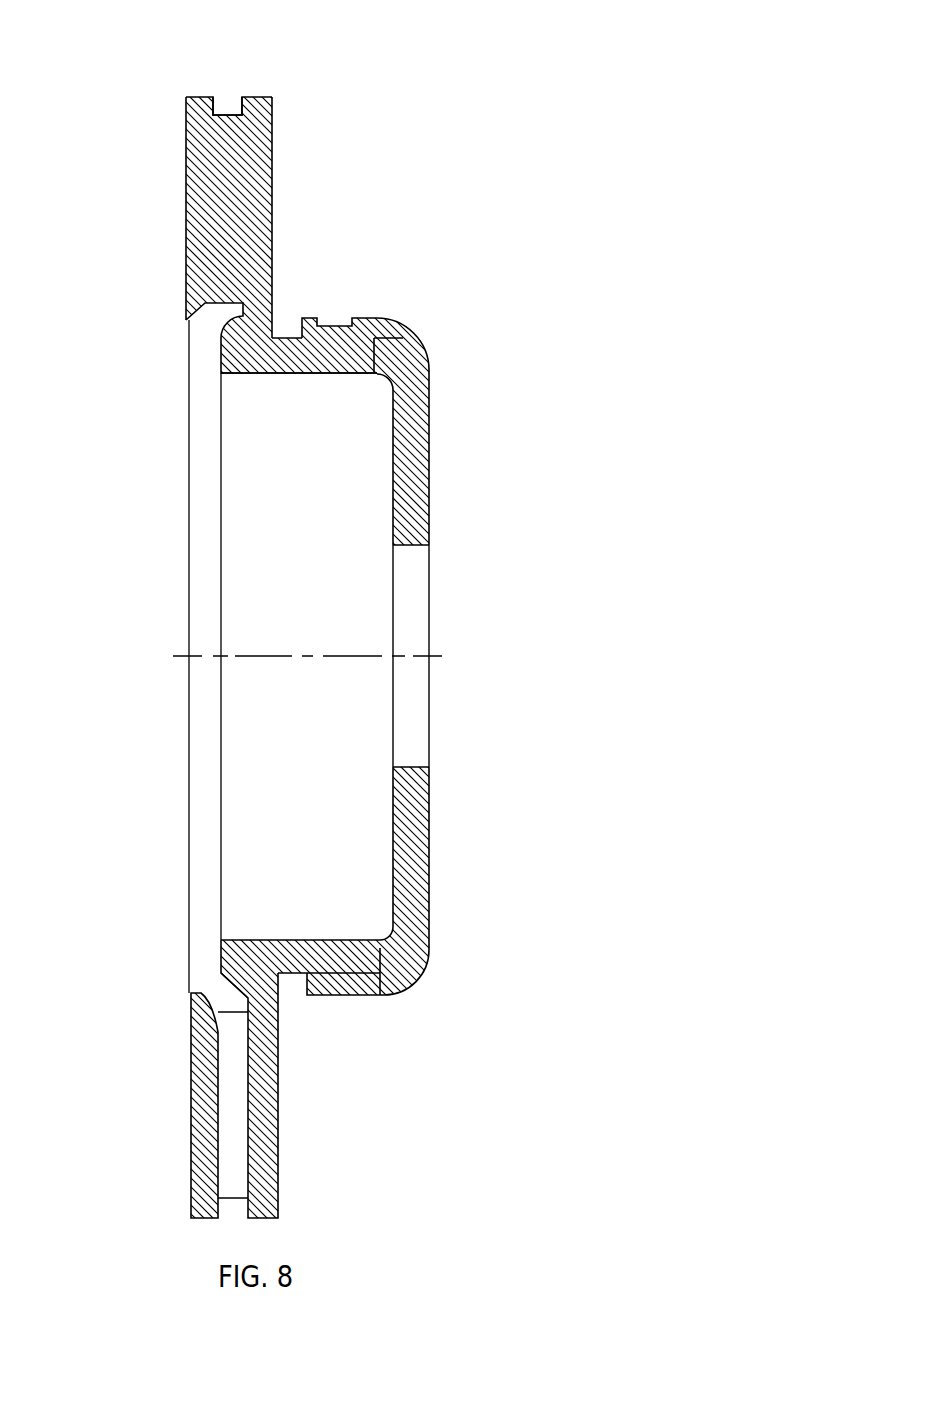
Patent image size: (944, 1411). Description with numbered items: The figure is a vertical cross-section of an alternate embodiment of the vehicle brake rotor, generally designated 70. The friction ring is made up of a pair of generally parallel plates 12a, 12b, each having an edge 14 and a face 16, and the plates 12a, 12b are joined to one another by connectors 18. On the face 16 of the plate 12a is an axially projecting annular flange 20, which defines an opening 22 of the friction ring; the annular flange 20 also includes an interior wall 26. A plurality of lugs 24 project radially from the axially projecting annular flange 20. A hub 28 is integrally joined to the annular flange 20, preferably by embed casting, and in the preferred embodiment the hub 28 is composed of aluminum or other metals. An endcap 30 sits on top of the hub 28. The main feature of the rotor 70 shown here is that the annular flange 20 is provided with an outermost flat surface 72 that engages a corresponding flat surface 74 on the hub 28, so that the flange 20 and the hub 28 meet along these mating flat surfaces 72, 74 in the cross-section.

The vehicle brake rotor 70 is at (158, 129).
The edge 14 is at (202, 97).
The connector 18 is at (223, 137).
The face 16 is at (272, 194).
The interior wall 26 is at (262, 374).
The annular flange 20 is at (287, 363).
The lug 24 is at (338, 320).
The outermost flat surface 72 is at (370, 365).
The flat surface 74 is at (403, 338).
The hub 28 is at (428, 446).
The endcap 30 is at (427, 548).
The opening 22 is at (287, 660).
The plate 12a is at (280, 1145).
The plate 12b is at (187, 1136).